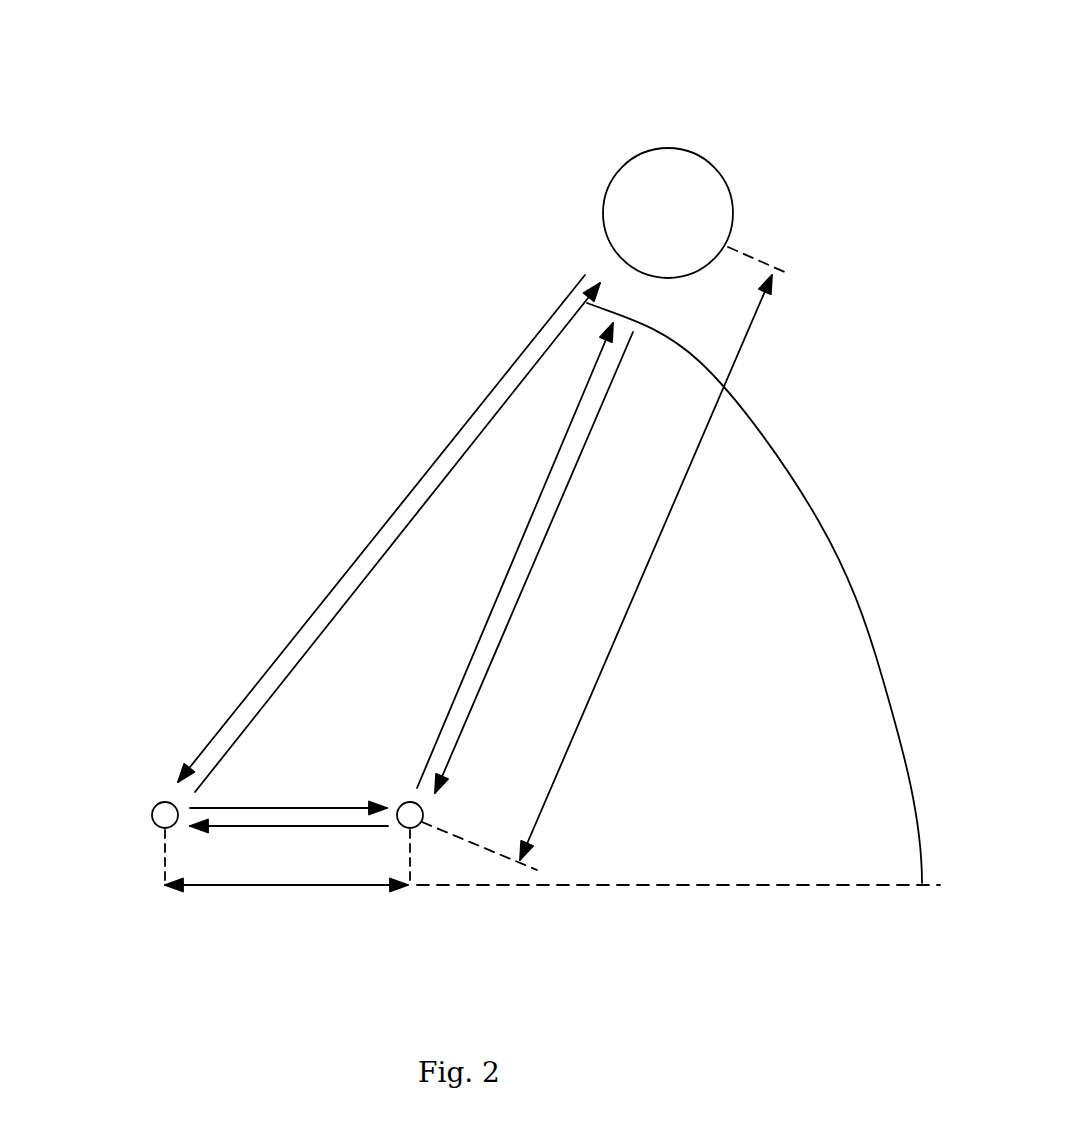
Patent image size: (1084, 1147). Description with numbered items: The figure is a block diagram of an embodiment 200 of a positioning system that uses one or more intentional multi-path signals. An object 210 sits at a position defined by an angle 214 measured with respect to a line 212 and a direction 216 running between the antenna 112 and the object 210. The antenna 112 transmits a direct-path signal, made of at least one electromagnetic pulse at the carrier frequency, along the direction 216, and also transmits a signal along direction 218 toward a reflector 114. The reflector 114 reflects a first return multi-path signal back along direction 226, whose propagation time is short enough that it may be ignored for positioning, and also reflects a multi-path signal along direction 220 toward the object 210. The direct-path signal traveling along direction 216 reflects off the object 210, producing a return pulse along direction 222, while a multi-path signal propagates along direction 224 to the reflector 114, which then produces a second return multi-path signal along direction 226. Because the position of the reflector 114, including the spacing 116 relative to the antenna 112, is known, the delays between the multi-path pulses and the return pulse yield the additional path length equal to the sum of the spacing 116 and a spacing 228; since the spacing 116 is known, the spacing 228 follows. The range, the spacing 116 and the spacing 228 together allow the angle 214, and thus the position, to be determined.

The embodiment of the positioning system 200 is at (495, 103).
The object 210 is at (733, 226).
The line 212 is at (738, 887).
The angle 214 is at (857, 610).
The direction 216 is at (373, 565).
The direction 218 is at (265, 806).
The direction 220 is at (505, 587).
The direction 222 is at (280, 655).
The direction 224 is at (560, 502).
The direction 226 is at (267, 826).
The spacing 228 is at (645, 568).
The antenna 112 is at (152, 808).
The reflector 114 is at (423, 814).
The spacing 116 is at (320, 886).